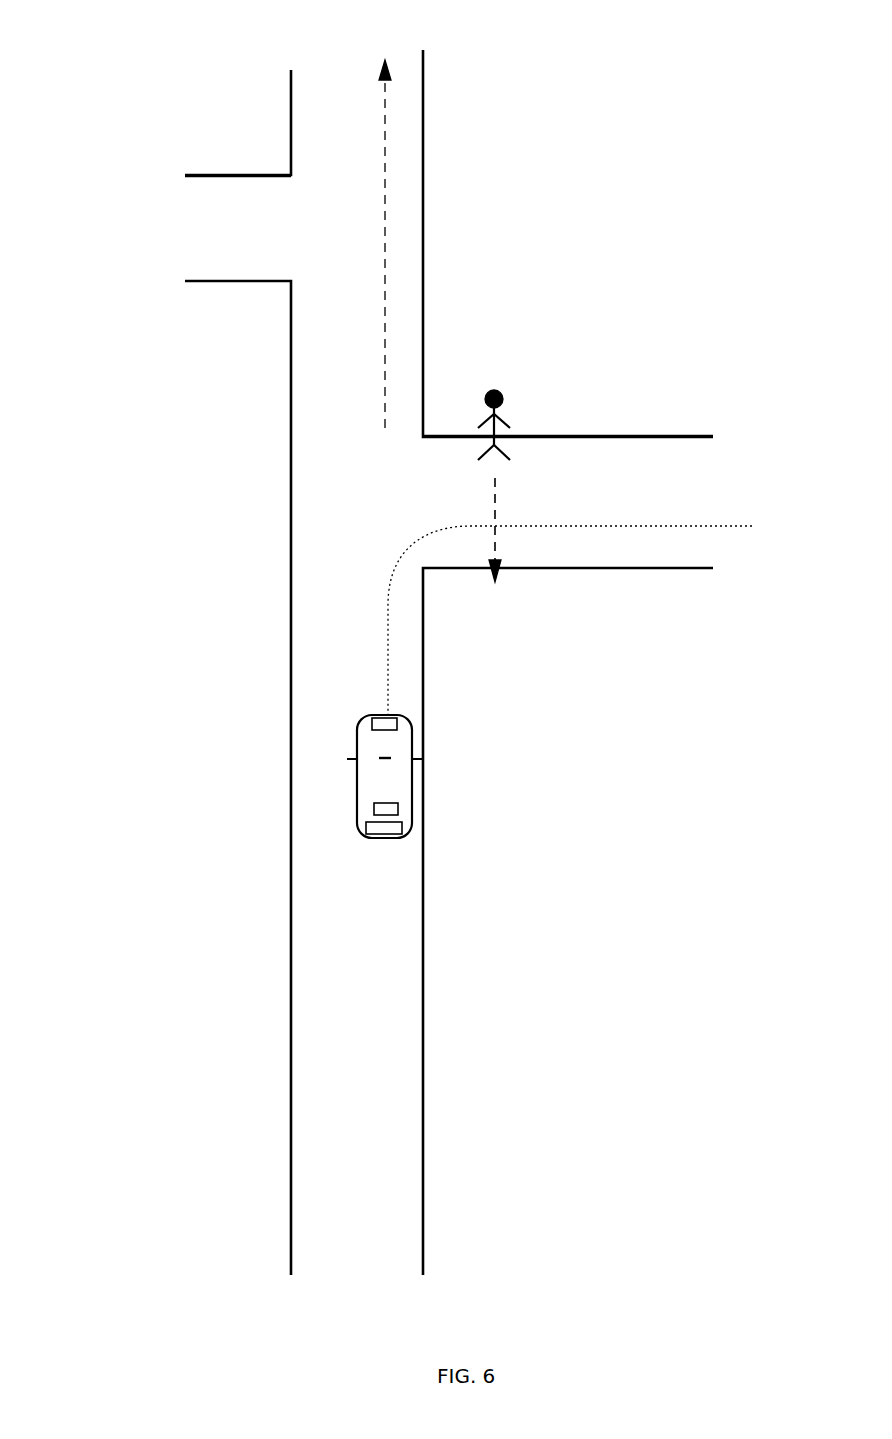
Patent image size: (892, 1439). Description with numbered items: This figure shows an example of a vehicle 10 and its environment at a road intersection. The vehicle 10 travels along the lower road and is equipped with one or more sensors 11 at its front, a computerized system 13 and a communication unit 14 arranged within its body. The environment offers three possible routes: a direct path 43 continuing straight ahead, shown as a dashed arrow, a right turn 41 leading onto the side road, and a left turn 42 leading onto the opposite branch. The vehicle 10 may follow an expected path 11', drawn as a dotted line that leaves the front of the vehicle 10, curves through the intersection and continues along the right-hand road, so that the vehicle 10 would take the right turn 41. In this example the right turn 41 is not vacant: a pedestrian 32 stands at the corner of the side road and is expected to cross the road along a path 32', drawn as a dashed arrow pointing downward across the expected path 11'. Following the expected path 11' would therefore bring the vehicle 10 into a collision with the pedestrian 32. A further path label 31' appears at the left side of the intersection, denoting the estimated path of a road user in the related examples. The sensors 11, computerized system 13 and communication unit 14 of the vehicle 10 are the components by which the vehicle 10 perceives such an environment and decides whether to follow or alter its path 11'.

The direct path 43 is at (375, 218).
The left turn 42 is at (237, 200).
The right turn 41 is at (442, 435).
The pedestrian 32 is at (529, 421).
The path 31' is at (384, 468).
The pedestrian path 32' is at (536, 530).
The path 11' is at (584, 589).
The vehicle 10 is at (412, 788).
The sensors 11 is at (362, 703).
The computerized system 13 is at (380, 805).
The communication unit 14 is at (368, 840).